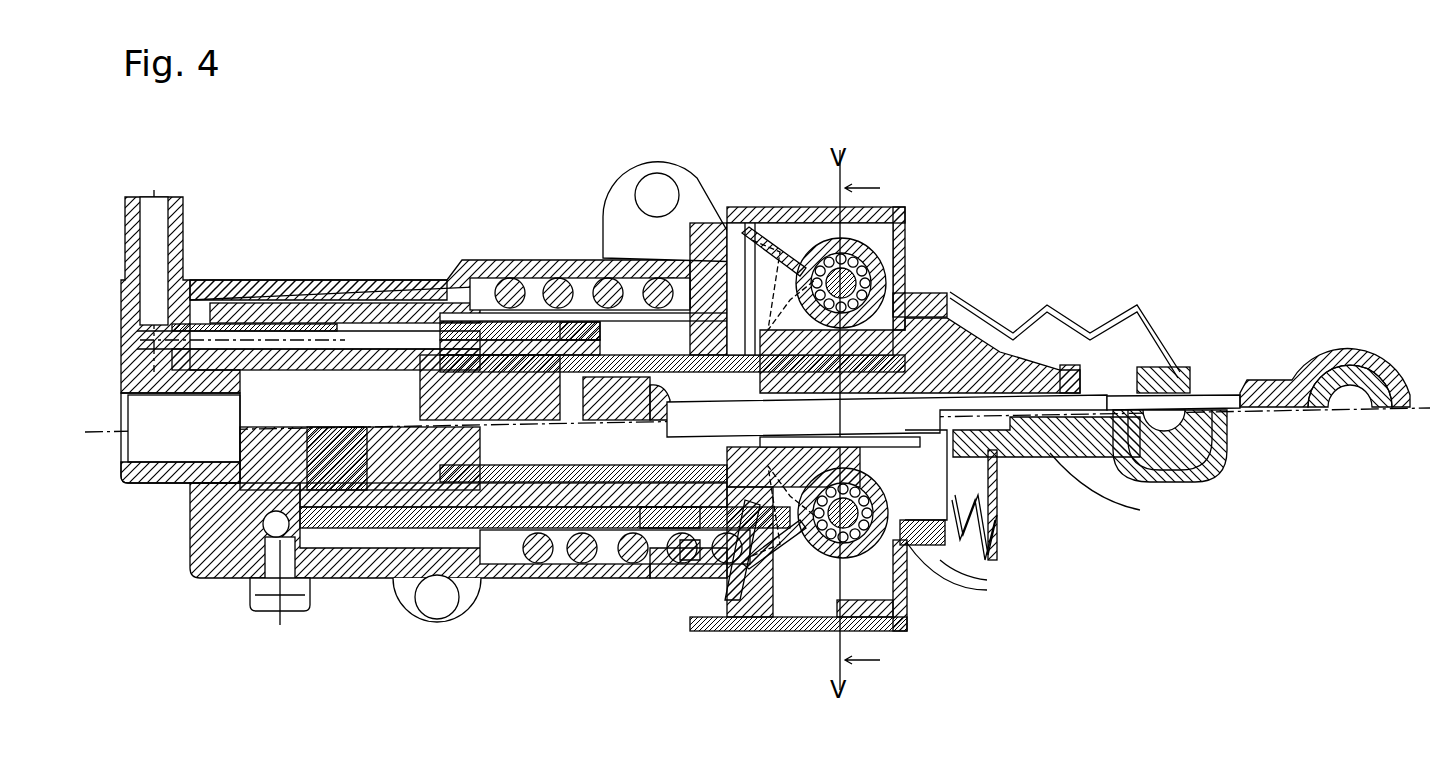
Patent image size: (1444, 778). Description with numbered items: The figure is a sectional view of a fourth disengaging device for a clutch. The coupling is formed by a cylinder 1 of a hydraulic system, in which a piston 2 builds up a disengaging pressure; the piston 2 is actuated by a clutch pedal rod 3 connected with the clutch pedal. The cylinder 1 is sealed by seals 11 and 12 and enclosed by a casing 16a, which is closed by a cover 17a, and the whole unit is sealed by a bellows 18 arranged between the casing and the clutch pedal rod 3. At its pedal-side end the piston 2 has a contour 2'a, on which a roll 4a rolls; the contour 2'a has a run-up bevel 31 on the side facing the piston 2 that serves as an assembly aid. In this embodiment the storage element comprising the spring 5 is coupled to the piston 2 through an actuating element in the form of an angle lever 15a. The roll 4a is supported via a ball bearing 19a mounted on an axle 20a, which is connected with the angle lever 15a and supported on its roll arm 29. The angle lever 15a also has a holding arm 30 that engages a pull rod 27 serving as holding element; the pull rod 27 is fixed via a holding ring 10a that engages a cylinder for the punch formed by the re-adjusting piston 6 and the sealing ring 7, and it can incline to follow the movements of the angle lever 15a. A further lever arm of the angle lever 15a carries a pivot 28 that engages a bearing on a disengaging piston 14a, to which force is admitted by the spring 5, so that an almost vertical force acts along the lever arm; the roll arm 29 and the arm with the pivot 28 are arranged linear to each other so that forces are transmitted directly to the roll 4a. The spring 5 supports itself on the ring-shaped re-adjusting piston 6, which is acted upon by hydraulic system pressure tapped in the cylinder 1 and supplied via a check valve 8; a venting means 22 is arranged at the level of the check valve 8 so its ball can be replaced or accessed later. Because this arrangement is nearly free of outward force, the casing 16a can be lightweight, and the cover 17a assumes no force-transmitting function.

The cylinder 1 is at (223, 485).
The piston 2 is at (740, 523).
The contour 2'a is at (920, 300).
The clutch pedal rod 3 is at (1015, 413).
The roll 4a is at (900, 207).
The spring 5 is at (607, 293).
The re-adjusting piston 6 is at (490, 310).
The sealing ring 7 is at (430, 537).
The check valve 8 is at (273, 525).
The holding ring 10a is at (572, 588).
The seal 11 is at (425, 297).
The seal 12 is at (600, 318).
The disengaging piston 14a is at (707, 242).
The angle lever 15a is at (788, 262).
The casing 16a is at (390, 563).
The cover 17a is at (898, 608).
The bellows 18 is at (1035, 313).
The ball bearing 19a is at (883, 600).
The axle 20a is at (905, 550).
The venting means 22 is at (297, 598).
The pull rod 27 is at (713, 600).
The pivot 28 is at (738, 237).
The roll arm 29 is at (807, 245).
The holding arm 30 is at (827, 585).
The run-up bevel 31 is at (652, 557).